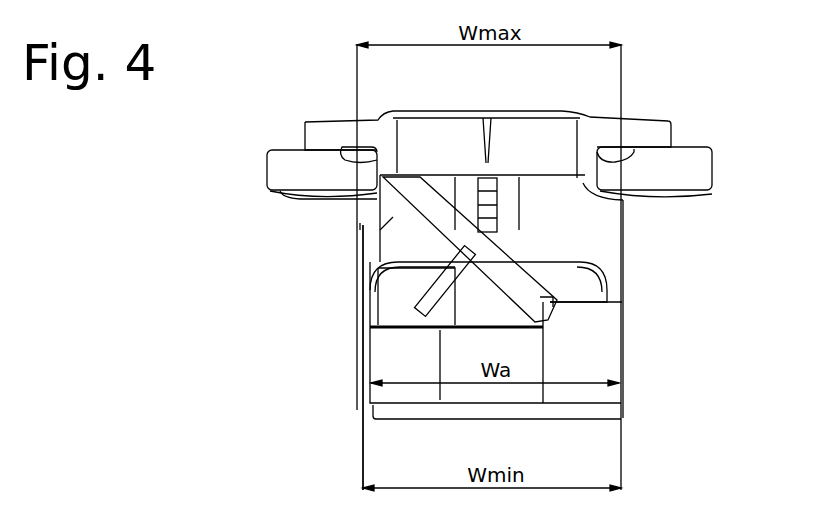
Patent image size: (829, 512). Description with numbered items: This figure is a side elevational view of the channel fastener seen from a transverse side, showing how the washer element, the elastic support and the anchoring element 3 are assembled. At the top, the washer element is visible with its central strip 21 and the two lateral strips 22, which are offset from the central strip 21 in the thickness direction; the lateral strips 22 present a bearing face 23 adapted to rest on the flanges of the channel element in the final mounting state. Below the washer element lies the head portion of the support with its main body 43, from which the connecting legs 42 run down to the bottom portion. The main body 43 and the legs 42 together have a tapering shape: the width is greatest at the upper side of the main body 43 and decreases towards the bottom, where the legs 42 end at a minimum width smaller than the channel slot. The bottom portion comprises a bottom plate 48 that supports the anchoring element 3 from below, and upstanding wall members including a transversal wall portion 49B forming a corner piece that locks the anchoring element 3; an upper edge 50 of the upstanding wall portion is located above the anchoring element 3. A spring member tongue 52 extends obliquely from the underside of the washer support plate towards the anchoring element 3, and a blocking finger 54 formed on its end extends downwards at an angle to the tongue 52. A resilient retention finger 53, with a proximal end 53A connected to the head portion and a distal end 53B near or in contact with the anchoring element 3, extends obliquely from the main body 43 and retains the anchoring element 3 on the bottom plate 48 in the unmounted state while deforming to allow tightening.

The anchoring element 3 is at (414, 370).
The central strip 21 is at (583, 117).
The lateral strips 22 is at (292, 163).
The bearing face 23 is at (290, 203).
The connecting legs 42 is at (368, 362).
The main body 43 is at (385, 224).
The bottom plate 48 is at (455, 414).
The transversal wall portion 49B is at (604, 362).
The upper edge 50 is at (586, 298).
The tongue 52 is at (512, 258).
The retention finger 53 is at (526, 256).
The proximal end 53A is at (458, 248).
The distal end 53B is at (410, 326).
The blocking finger 54 is at (541, 319).